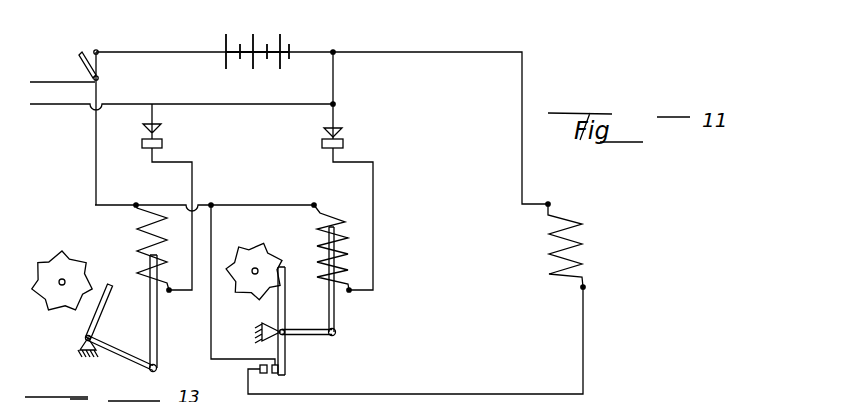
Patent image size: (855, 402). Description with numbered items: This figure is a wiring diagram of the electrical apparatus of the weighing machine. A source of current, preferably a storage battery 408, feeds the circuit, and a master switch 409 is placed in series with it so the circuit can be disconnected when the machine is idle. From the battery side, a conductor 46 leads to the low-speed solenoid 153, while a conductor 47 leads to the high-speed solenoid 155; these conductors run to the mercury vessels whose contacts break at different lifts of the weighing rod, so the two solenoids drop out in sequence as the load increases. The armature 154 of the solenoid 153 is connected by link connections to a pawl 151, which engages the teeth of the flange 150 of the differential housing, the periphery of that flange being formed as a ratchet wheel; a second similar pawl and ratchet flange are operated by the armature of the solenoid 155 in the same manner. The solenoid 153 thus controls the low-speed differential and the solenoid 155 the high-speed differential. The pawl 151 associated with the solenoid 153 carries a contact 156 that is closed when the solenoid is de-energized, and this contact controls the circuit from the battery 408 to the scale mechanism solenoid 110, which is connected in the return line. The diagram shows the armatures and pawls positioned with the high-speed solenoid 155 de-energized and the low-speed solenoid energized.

The master switch 409 is at (93, 50).
The storage battery 408 is at (243, 46).
The conductor 46 is at (152, 150).
The conductor 47 is at (333, 150).
The solenoid 155 is at (137, 228).
The solenoid 153 is at (320, 214).
The flange 150 is at (60, 305).
The pawl 151 is at (99, 322).
The armature 154 is at (337, 320).
The contact 156 is at (272, 378).
The solenoid 110 is at (550, 238).